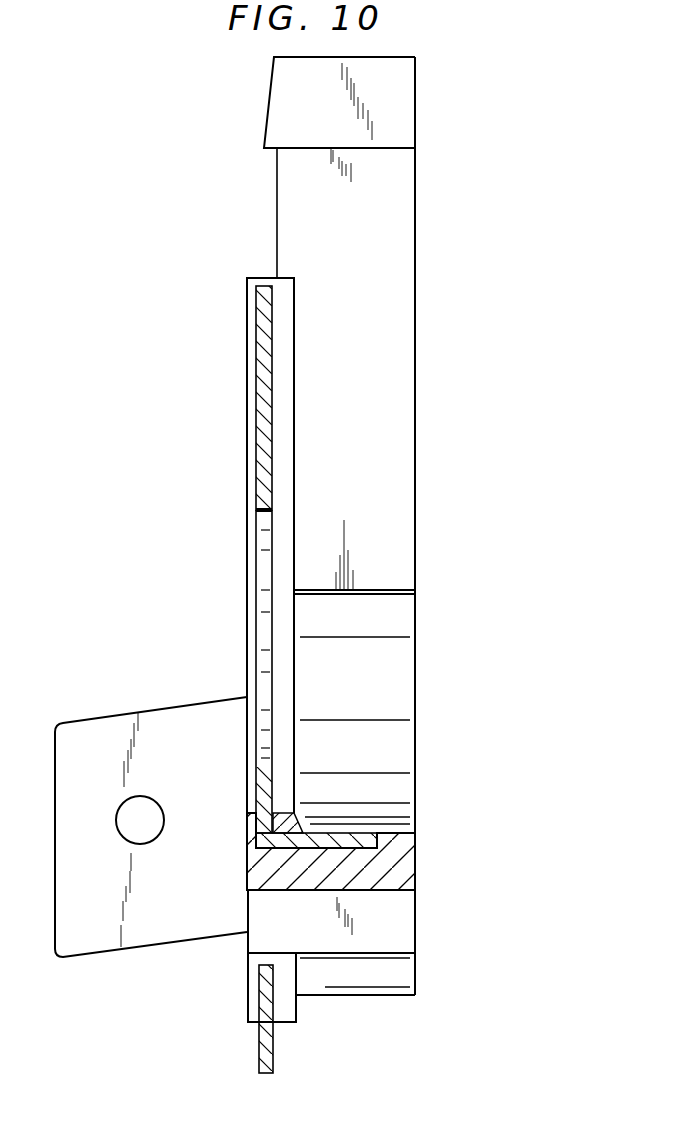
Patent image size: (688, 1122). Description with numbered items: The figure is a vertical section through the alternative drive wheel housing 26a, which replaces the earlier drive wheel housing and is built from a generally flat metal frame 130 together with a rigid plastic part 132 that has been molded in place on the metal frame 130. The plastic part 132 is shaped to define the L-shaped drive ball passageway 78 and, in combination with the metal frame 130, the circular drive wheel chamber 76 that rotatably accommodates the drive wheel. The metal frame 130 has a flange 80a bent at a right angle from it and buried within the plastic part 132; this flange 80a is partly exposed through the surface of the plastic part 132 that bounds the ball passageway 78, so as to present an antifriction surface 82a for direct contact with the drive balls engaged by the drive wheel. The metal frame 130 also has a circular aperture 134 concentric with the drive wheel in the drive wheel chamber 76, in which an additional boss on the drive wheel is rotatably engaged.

The alternative drive wheel housing 26a is at (162, 180).
The drive ball passageway 78 is at (403, 210).
The plastic part 132 is at (422, 285).
The drive wheel chamber 76 is at (395, 400).
The metal frame 130 is at (250, 357).
The circular aperture 134 is at (262, 513).
The antifriction surface 82a is at (365, 832).
The flange 80a is at (367, 850).